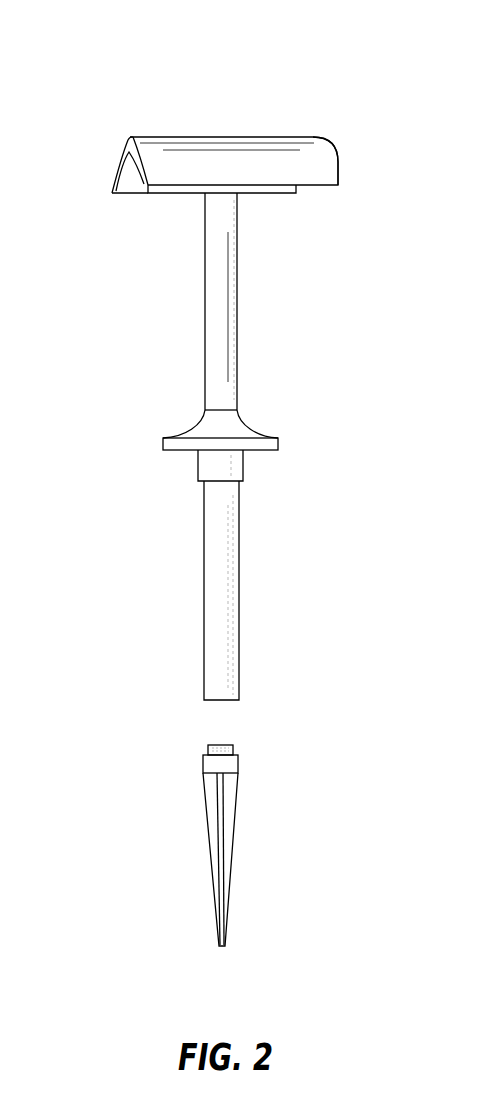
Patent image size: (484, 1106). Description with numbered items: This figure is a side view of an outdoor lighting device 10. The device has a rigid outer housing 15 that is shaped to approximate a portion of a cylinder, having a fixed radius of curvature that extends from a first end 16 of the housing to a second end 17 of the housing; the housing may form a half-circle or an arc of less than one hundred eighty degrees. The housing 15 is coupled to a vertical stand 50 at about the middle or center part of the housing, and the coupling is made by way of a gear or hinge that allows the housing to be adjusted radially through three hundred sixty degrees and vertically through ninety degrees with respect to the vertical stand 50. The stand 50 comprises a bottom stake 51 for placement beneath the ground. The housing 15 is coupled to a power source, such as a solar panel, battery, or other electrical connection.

The outdoor lighting device 10 is at (344, 83).
The rigid outer housing 15 is at (228, 137).
The first end of the housing 16 is at (130, 145).
The second end of the housing 17 is at (334, 157).
The vertical stand 50 is at (218, 372).
The bottom stake 51 is at (216, 828).